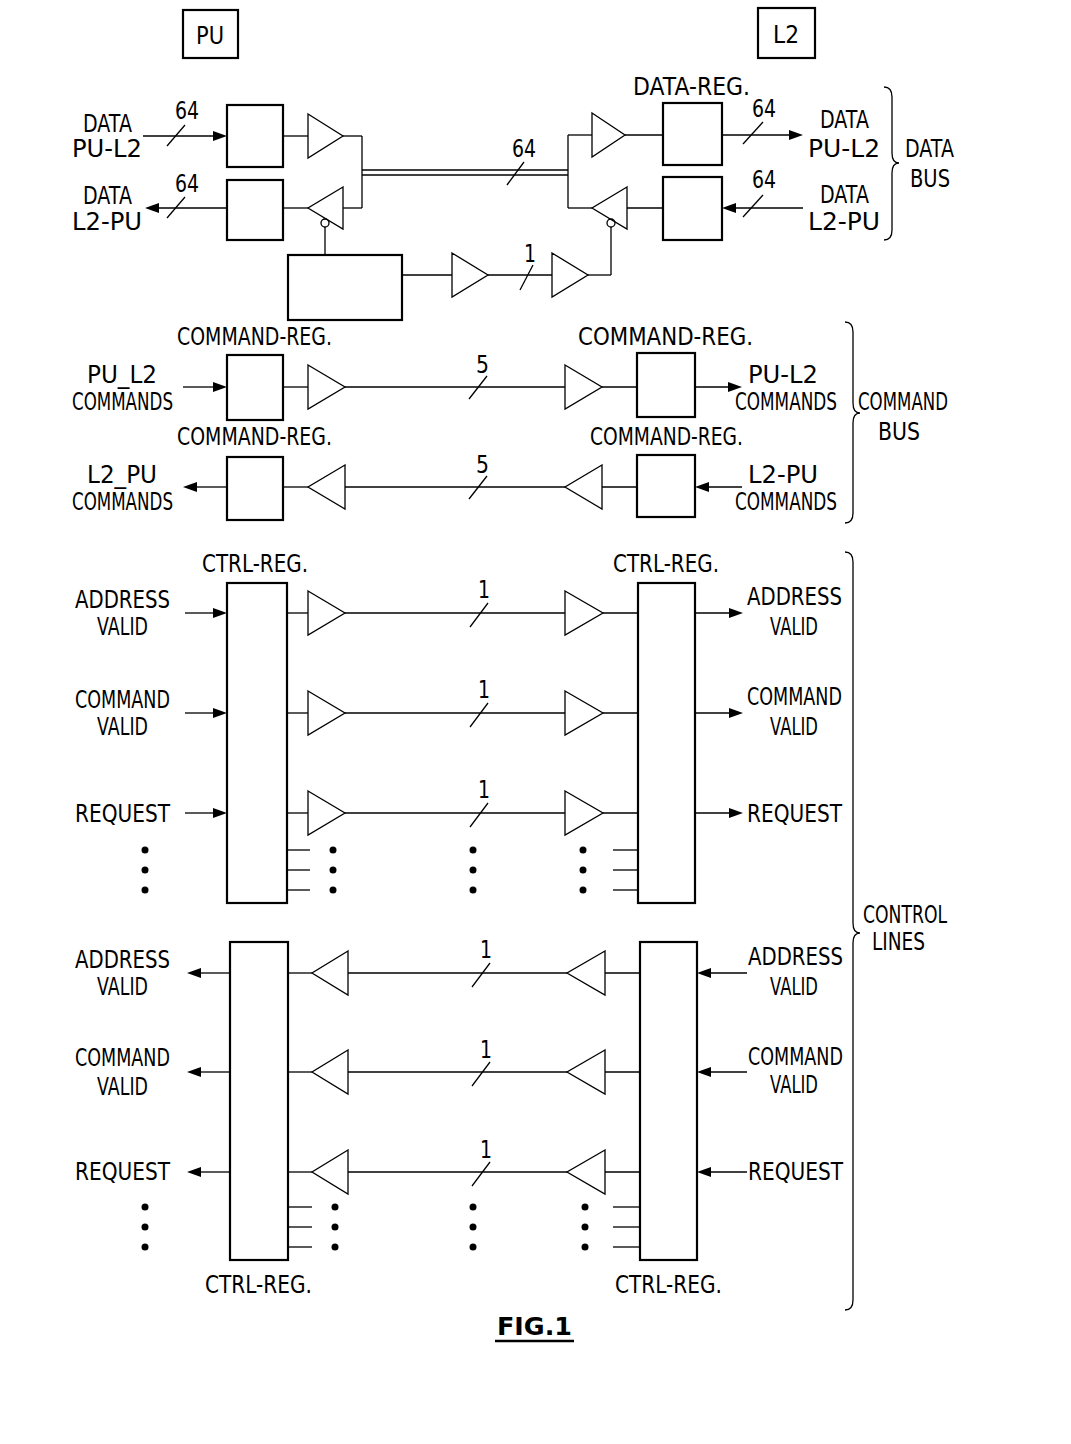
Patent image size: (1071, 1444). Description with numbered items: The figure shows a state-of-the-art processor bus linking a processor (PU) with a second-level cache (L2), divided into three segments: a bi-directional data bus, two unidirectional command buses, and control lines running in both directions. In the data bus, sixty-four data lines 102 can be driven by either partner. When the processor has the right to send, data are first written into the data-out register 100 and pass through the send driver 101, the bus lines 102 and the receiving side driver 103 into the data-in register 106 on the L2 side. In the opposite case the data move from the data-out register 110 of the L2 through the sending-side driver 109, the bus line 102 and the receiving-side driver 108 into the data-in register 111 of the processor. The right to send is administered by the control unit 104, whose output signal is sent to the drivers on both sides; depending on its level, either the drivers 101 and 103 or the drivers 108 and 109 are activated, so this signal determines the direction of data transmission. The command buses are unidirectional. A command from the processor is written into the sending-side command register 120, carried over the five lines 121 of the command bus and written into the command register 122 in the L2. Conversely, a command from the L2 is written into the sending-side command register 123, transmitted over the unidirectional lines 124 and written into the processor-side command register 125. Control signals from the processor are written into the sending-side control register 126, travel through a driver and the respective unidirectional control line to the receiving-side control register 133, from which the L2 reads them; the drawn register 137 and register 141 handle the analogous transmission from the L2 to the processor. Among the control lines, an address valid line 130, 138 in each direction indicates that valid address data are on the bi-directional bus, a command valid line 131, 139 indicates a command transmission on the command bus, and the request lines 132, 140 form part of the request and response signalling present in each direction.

The data-out register 100 is at (276, 160).
The send driver 101 is at (324, 120).
The data lines 102 is at (400, 170).
The receiving side driver 103 is at (612, 117).
The control unit 104 is at (288, 283).
The data-in register 106 is at (713, 158).
The receiving-side driver 108 is at (345, 198).
The sending-side driver 109 is at (617, 229).
The data-out register 110 is at (713, 232).
The data-in register 111 is at (276, 231).
The sending-side command register 120 is at (277, 398).
The lines of the command bus 121 is at (358, 387).
The command register 122 is at (688, 398).
The sending-side command register 123 is at (688, 498).
The unidirectional lines 124 is at (358, 487).
The processor-side command register 125 is at (277, 498).
The sending-side control register 126 is at (279, 625).
The address valid control line 130 is at (358, 613).
The command valid control line 131 is at (358, 713).
The request control line 132 is at (358, 813).
The receiving-side control register 133 is at (689, 625).
The L2 control register (L2 to PU) 137 is at (691, 985).
The address valid control line 138 is at (360, 973).
The command valid control line 139 is at (360, 1072).
The request control line (L2 to PU) 140 is at (360, 1172).
The PU control register (L2 to PU) 141 is at (281, 985).